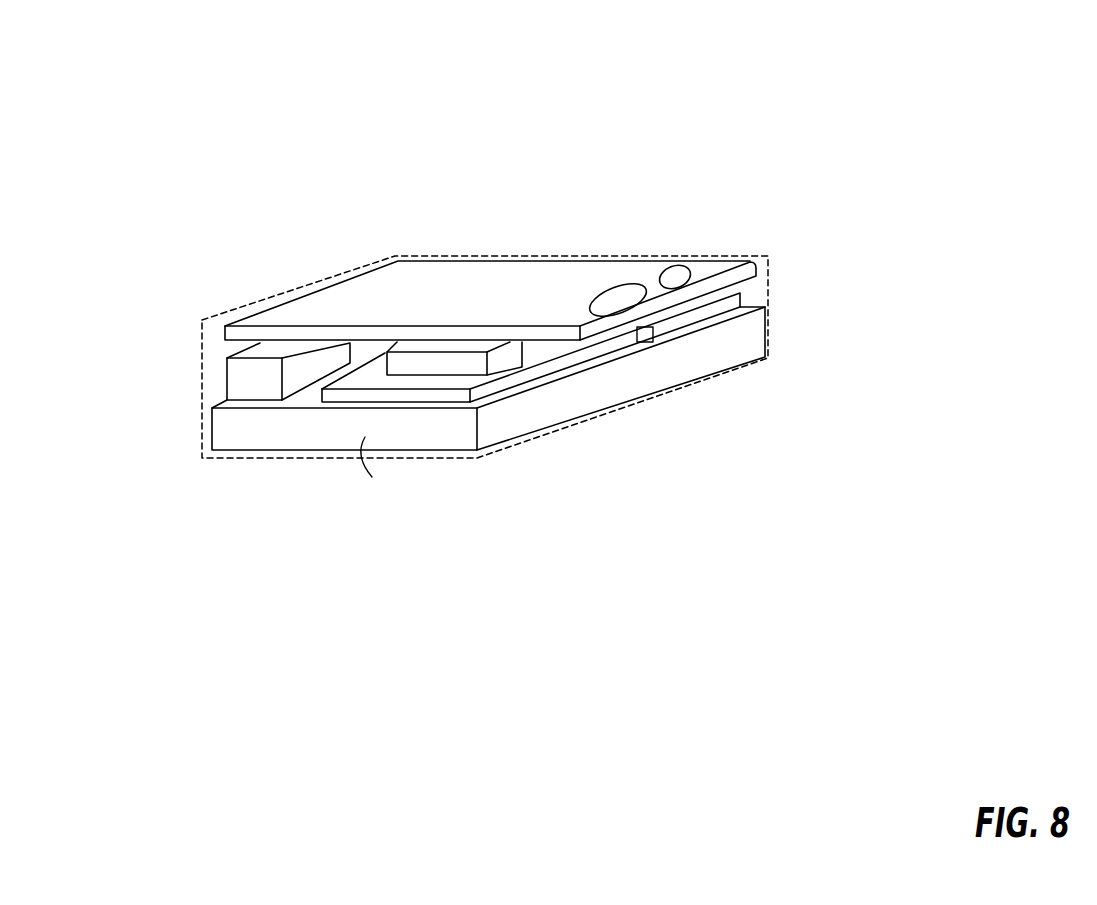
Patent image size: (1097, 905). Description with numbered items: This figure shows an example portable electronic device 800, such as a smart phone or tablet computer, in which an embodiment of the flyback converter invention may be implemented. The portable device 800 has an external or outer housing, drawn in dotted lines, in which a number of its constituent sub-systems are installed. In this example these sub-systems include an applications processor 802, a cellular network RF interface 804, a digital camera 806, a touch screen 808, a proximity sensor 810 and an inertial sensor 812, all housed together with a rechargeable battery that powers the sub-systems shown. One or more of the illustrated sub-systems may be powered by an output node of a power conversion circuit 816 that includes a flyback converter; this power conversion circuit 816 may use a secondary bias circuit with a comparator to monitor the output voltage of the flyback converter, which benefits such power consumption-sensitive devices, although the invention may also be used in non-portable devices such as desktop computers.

The portable electronic device 800 is at (131, 70).
The applications processor 802 is at (528, 379).
The cellular network RF interface 804 is at (246, 376).
The digital camera 806 is at (768, 267).
The touch screen 808 is at (626, 270).
The proximity sensor 810 is at (612, 289).
The inertial sensor 812 is at (425, 356).
The power conversion circuit 816 is at (674, 324).